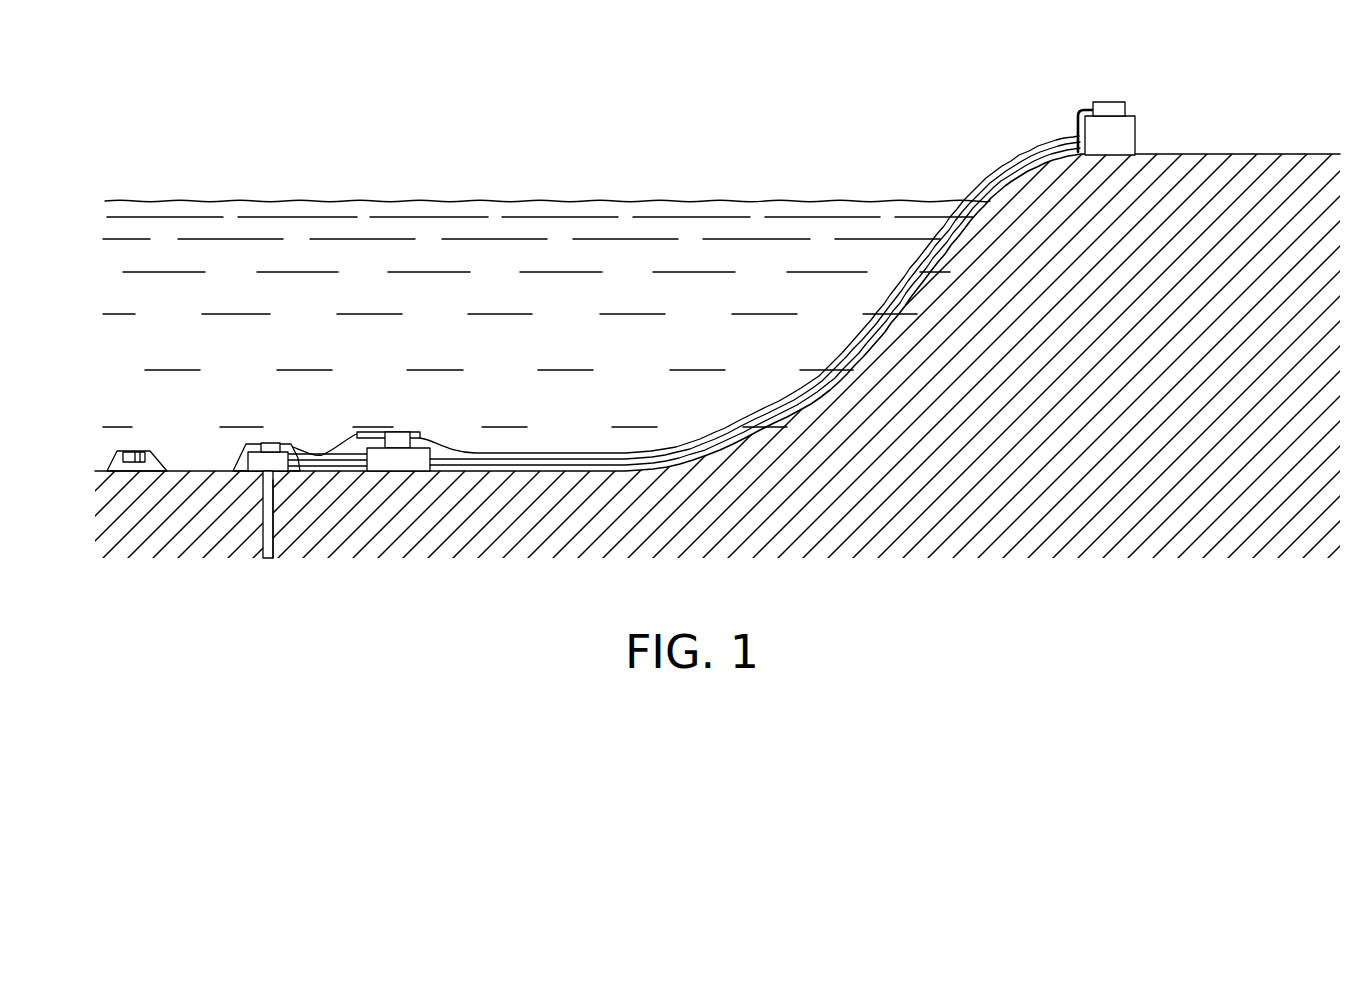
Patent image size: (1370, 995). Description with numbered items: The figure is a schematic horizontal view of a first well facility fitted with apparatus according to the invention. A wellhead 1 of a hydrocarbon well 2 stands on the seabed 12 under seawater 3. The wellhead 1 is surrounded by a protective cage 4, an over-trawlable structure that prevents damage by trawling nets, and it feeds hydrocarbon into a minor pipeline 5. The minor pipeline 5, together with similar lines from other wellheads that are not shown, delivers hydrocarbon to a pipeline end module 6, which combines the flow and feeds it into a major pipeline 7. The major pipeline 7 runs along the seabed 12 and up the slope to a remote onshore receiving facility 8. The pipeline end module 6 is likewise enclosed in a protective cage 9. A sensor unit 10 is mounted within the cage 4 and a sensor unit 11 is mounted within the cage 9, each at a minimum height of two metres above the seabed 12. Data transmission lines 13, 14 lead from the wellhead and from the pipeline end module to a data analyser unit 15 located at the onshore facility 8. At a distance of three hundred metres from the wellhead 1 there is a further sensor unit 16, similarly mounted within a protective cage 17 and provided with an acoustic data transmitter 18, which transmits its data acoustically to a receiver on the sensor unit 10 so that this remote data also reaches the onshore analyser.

The wellhead 1 is at (260, 474).
The hydrocarbon well 2 is at (275, 543).
The seawater 3 is at (608, 215).
The protective cage 4 is at (242, 455).
The minor pipeline 5 is at (357, 468).
The pipeline end module 6 is at (421, 447).
The major pipeline 7 is at (577, 456).
The onshore receiving facility 8 is at (1128, 132).
The protective cage 9 is at (357, 432).
The sensor unit 10 is at (270, 444).
The sensor unit 11 is at (398, 435).
The seabed 12 is at (606, 476).
The data transmission line 13 is at (314, 452).
The data transmission line 14 is at (477, 453).
The data analyser unit 15 is at (1110, 102).
The further sensor unit 16 is at (133, 452).
The protective cage 17 is at (107, 462).
The acoustic data transmitter 18 is at (147, 453).